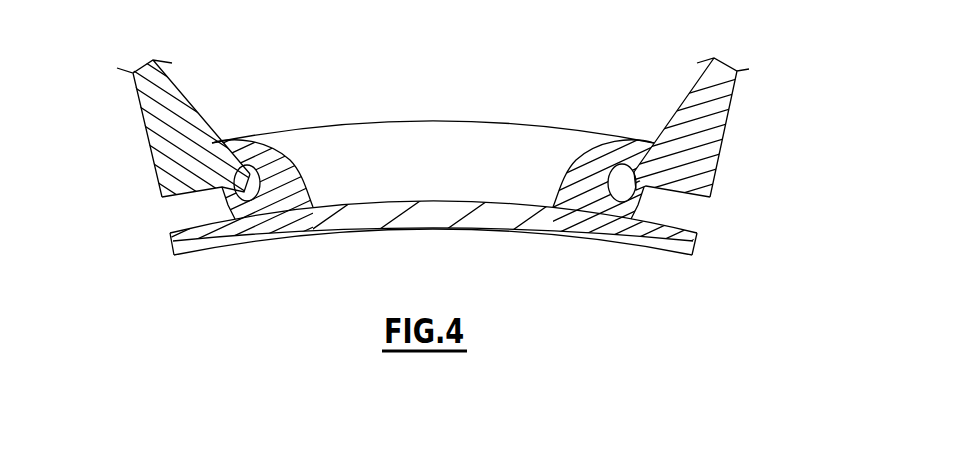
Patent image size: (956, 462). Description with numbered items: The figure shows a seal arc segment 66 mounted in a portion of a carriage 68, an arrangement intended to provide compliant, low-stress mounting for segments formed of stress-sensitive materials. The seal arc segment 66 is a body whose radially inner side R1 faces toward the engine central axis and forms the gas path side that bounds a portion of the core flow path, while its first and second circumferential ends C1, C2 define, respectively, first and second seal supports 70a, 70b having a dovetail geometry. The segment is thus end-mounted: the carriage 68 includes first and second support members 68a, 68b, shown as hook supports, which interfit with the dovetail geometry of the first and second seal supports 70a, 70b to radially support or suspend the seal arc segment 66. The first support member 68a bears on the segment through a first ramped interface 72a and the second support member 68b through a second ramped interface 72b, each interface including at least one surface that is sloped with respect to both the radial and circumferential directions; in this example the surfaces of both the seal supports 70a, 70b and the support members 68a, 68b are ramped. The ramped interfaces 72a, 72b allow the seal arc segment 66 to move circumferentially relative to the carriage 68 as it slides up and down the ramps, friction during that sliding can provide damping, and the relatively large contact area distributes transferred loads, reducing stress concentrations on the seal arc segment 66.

The seal arc segment 66 is at (432, 214).
The carriage 68 is at (433, 147).
The first support member 68a is at (714, 190).
The second support member 68b is at (155, 187).
The first seal support 70a is at (620, 207).
The second seal support 70b is at (245, 199).
The first ramped interface 72a is at (615, 160).
The second ramped interface 72b is at (248, 163).
The first circumferential end C1 is at (700, 225).
The second circumferential end C2 is at (165, 225).
The radially inner side R1 is at (571, 236).